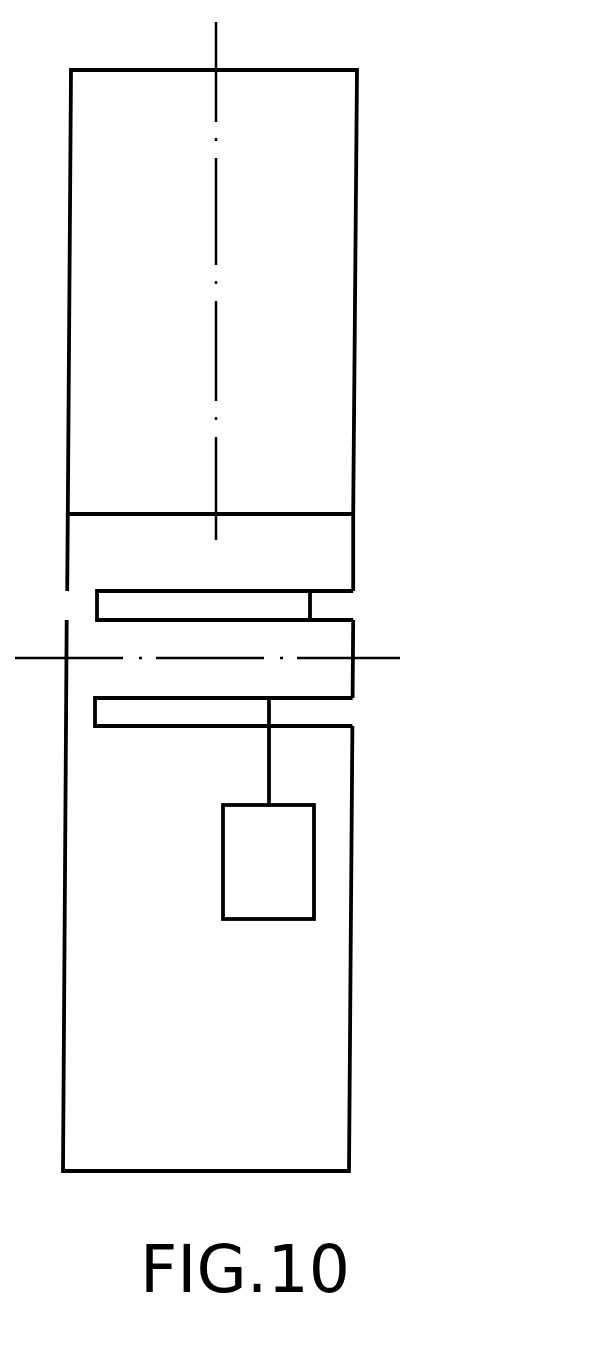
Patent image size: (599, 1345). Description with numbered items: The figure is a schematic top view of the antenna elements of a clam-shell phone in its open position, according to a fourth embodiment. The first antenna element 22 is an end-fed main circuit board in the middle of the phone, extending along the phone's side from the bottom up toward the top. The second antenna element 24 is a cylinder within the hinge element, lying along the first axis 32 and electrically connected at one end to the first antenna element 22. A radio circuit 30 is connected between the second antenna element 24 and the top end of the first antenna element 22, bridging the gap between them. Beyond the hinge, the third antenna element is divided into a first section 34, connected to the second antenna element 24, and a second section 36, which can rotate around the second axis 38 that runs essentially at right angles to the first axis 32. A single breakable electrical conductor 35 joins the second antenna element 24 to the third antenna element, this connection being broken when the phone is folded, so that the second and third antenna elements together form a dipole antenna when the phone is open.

The first antenna element 22 is at (300, 1032).
The second antenna element 24 is at (333, 683).
The radio circuit 30 is at (290, 882).
The first axis 32 is at (372, 652).
The first section of the third antenna element 34 is at (320, 547).
The electrical conductor 35 is at (313, 606).
The second section of the third antenna element 36 is at (307, 365).
The second axis 38 is at (217, 50).